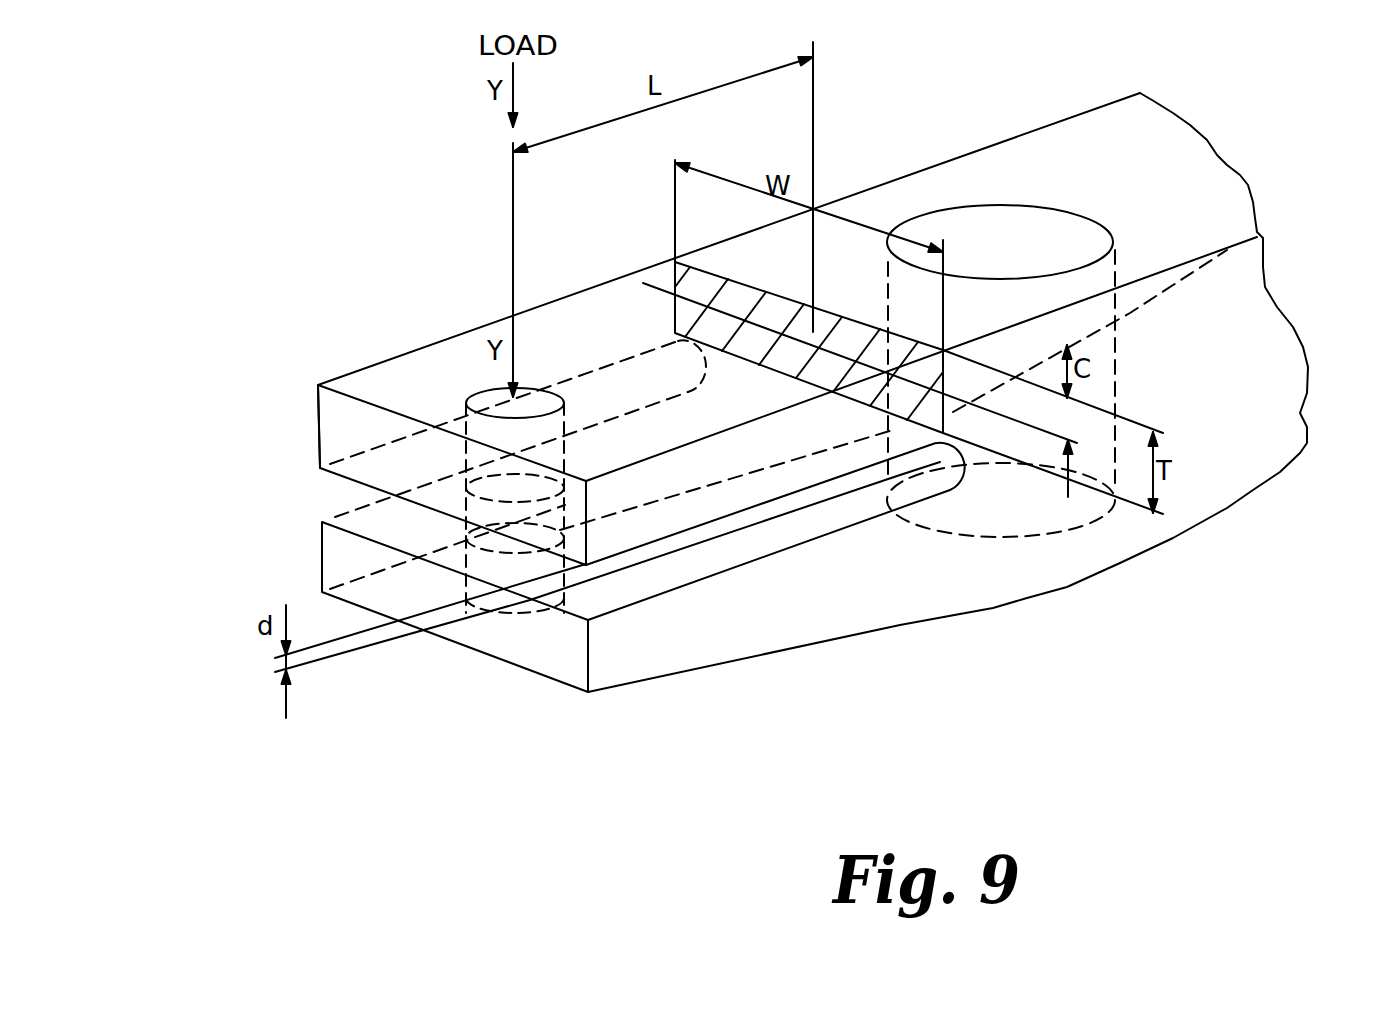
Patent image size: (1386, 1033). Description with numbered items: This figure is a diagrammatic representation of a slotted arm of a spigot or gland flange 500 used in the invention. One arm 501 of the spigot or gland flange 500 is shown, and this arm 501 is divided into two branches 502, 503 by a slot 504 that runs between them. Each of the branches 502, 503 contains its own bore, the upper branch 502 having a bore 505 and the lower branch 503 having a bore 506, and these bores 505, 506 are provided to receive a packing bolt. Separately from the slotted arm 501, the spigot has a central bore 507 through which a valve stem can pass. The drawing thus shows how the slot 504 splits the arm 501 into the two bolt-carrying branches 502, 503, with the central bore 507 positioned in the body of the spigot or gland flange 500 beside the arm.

The spigot or gland flange 500 is at (1207, 103).
The arm 501 is at (303, 457).
The branch 502 is at (455, 345).
The branch 503 is at (742, 640).
The slot 504 is at (352, 497).
The bore 505 is at (520, 390).
The bore 506 is at (490, 532).
The central bore 507 is at (1012, 220).